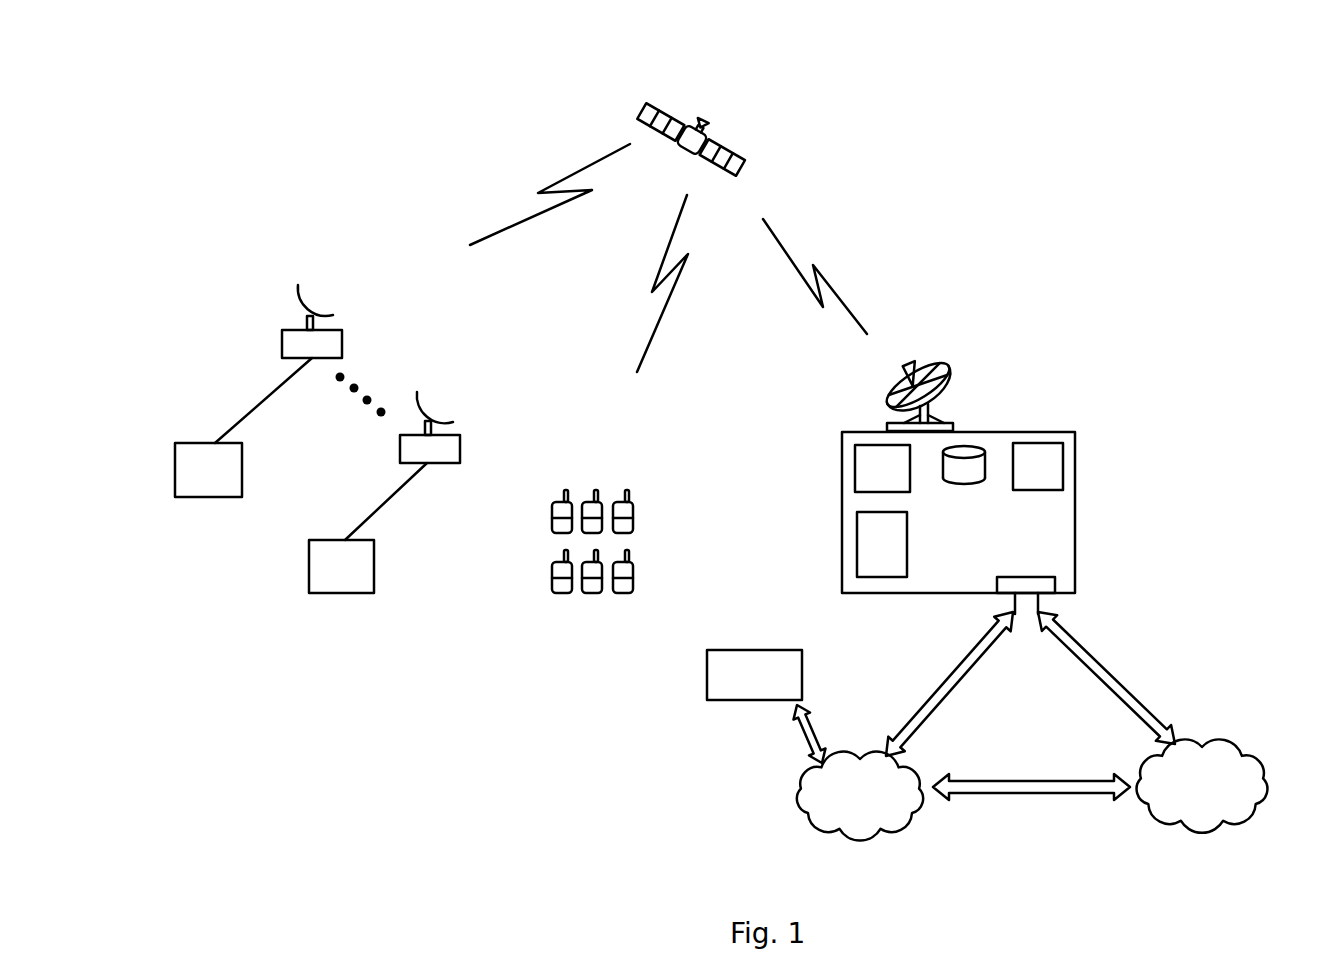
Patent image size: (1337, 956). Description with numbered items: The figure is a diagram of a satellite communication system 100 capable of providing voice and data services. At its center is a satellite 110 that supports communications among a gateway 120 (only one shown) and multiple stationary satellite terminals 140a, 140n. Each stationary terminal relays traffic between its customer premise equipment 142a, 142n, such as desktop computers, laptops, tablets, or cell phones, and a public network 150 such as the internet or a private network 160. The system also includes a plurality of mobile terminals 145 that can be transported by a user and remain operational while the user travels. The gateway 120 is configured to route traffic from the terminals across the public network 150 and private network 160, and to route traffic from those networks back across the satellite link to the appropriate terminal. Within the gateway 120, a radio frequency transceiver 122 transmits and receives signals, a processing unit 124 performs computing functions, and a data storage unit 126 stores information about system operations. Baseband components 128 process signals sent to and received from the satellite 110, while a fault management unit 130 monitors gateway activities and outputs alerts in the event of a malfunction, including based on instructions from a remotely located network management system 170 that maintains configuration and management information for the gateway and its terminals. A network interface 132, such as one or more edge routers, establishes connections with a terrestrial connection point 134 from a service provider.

The satellite communication system 100 is at (1098, 82).
The satellite 110 is at (730, 152).
The gateway 120 is at (1142, 333).
The radio frequency transceiver 122 is at (955, 371).
The processing unit 124 is at (855, 464).
The data storage unit 126 is at (965, 484).
The baseband components 128 is at (857, 546).
The fault management unit 130 is at (1063, 464).
The network interface 132 is at (1025, 577).
The terrestrial connection point 134 is at (1027, 620).
The stationary satellite terminal 140a is at (282, 340).
The stationary satellite terminal 140n is at (400, 447).
The customer premise equipment 142a is at (210, 497).
The customer premise equipment 142n is at (342, 594).
The mobile terminals 145 is at (532, 602).
The public network 150 is at (1202, 795).
The private network 160 is at (860, 807).
The network management system 170 is at (707, 682).